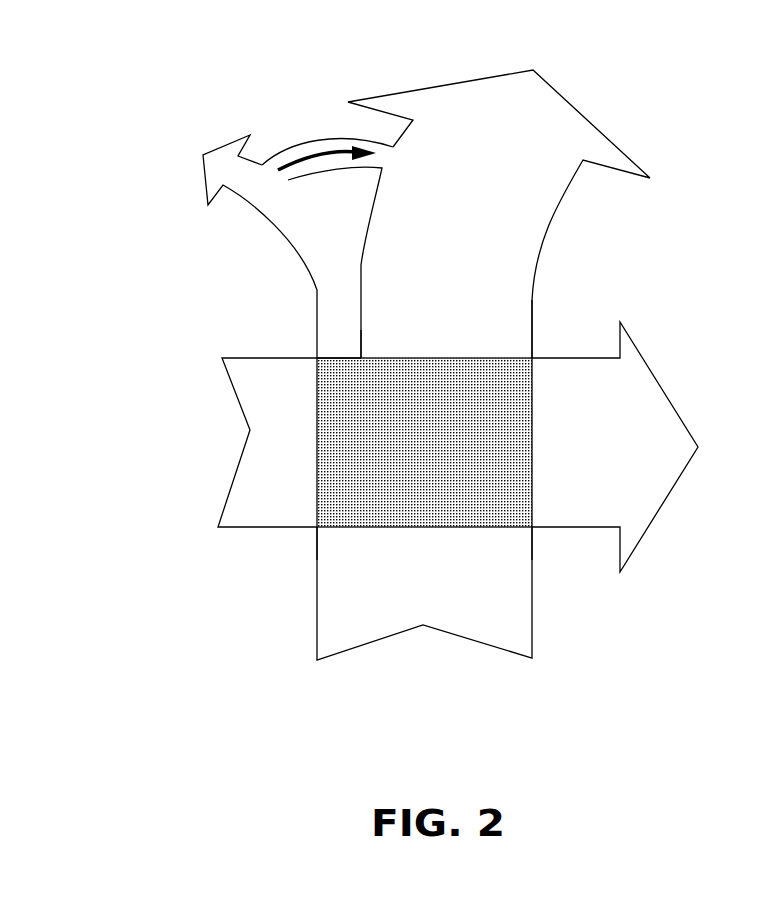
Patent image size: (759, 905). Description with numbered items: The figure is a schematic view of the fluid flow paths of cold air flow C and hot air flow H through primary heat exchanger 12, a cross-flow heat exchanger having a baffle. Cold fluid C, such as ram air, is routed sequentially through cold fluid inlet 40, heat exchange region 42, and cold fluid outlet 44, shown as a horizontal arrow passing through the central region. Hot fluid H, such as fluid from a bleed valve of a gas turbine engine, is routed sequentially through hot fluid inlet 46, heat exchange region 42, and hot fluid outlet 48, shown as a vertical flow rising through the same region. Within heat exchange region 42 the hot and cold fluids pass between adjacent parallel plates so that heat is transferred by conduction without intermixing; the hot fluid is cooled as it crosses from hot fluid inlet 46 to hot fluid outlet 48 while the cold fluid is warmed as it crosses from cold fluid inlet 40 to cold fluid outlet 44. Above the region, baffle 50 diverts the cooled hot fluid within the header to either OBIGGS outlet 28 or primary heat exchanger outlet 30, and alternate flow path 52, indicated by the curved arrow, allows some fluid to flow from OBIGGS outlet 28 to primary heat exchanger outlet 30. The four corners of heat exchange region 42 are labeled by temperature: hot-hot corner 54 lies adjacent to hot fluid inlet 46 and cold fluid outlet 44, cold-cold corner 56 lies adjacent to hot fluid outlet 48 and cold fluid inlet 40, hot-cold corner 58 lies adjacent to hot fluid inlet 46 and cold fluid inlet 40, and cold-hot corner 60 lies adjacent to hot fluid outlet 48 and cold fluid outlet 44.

The primary heat exchanger 12 is at (150, 542).
The OBIGGS outlet 28 is at (298, 246).
The primary heat exchanger outlet 30 is at (499, 214).
The cold fluid inlet 40 is at (317, 398).
The heat exchange region 42 is at (487, 500).
The cold fluid outlet 44 is at (532, 448).
The hot fluid inlet 46 is at (363, 528).
The hot fluid outlet 48 is at (387, 358).
The baffle 50 is at (361, 288).
The alternate flow path 52 is at (318, 141).
The hot-hot corner 54 is at (532, 527).
The cold-cold corner 56 is at (317, 358).
The hot-cold corner 58 is at (313, 528).
The cold-hot corner 60 is at (532, 352).
The cold fluid C is at (280, 433).
The hot fluid H is at (445, 600).